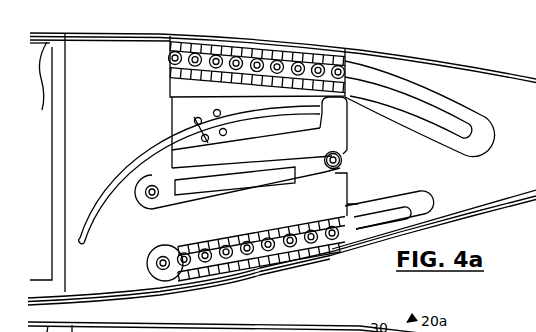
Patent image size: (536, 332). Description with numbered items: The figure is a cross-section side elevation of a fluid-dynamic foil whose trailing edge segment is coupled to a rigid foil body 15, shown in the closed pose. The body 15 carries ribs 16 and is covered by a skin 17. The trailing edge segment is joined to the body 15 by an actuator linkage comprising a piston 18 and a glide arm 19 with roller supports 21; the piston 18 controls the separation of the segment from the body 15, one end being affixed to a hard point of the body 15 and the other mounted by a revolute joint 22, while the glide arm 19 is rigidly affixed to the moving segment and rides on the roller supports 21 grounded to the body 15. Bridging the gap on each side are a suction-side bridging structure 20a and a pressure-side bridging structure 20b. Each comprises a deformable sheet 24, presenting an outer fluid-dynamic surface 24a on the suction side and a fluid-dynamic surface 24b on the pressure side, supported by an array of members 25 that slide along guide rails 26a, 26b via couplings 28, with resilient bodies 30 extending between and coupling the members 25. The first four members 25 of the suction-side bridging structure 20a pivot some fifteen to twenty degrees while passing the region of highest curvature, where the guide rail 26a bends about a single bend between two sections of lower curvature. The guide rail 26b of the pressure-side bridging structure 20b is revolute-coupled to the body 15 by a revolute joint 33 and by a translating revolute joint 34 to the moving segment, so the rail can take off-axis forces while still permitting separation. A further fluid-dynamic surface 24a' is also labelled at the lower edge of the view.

The foil body 15 is at (50, 233).
The ribs 16 is at (46, 108).
The skin 17 is at (80, 289).
The piston 18 is at (244, 164).
The glide arm 19 is at (103, 205).
The suction side bridging structure 20a is at (306, 26).
The pressure side bridging structure 20b is at (275, 292).
The roller supports 21 is at (192, 120).
The revolute joint 22 is at (343, 157).
The deformable sheet 24 is at (346, 50).
The fluid-dynamic surface 24a is at (226, 50).
The fluid-dynamic surface 24a' is at (224, 320).
The fluid-dynamic surface 24b is at (272, 276).
The members 25 is at (340, 66).
The guide rail 26a is at (432, 122).
The guide rail 26b is at (146, 255).
The couplings 28 is at (229, 66).
The resilient bodies 30 is at (302, 58).
The revolute joint 33 is at (163, 254).
The translating revolute joint 34 is at (351, 238).